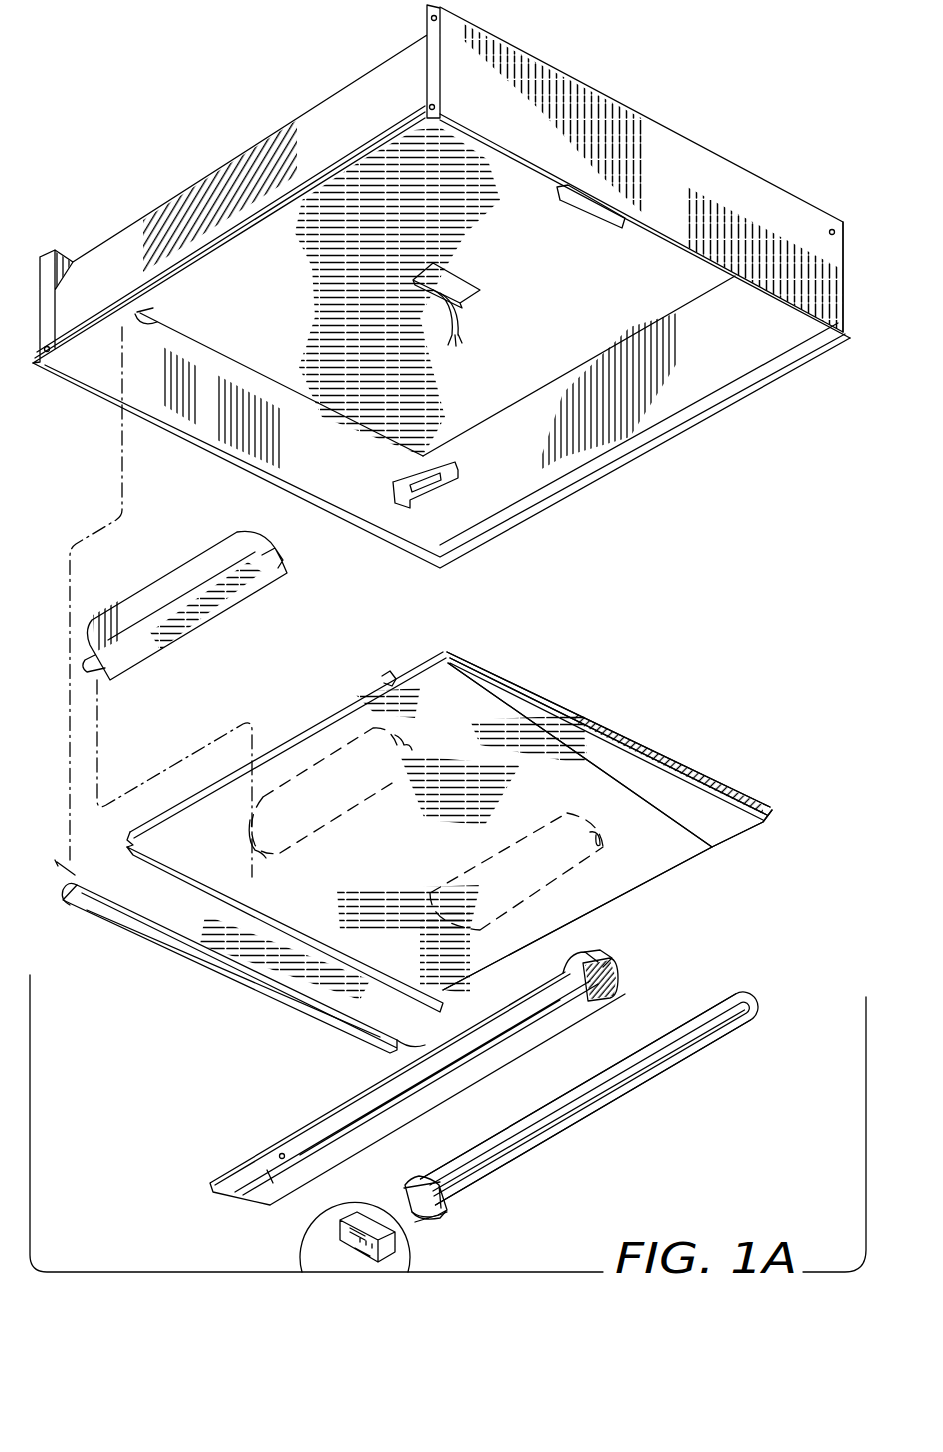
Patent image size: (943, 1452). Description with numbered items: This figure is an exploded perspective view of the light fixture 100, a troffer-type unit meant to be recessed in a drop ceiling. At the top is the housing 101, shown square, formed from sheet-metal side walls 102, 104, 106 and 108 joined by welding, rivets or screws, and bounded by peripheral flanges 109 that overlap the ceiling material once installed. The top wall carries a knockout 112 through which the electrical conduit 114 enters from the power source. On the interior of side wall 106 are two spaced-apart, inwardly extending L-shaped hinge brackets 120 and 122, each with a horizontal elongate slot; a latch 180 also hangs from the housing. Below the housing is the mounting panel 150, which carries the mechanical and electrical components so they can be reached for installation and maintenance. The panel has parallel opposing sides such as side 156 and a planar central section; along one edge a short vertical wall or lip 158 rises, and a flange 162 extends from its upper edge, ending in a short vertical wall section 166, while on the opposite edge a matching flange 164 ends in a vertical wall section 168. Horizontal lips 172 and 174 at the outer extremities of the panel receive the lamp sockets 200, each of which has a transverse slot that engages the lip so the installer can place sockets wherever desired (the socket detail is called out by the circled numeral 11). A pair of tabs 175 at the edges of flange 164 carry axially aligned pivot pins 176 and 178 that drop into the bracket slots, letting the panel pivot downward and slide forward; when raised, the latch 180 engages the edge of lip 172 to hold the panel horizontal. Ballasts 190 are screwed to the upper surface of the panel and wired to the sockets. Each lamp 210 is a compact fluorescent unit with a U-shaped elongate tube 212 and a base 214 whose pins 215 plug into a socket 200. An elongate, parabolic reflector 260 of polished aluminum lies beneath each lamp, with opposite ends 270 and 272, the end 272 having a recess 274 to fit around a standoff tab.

The light fixture 100 is at (686, 97).
The housing 101 is at (772, 213).
The side wall 102 is at (124, 256).
The side wall 104 is at (526, 455).
The side wall 106 is at (321, 466).
The side wall 108 is at (683, 160).
The peripheral flanges 109 is at (630, 455).
The knockout 112 is at (455, 282).
The electrical conduit 114 is at (458, 318).
The hinge bracket 120 is at (455, 470).
The hinge bracket 122 is at (145, 323).
The latch 180 is at (588, 214).
The ballast 190 is at (168, 572).
The mounting panel 150 is at (645, 848).
The side of panel 156 is at (640, 884).
The vertical wall or lip 158 is at (392, 673).
The flange 162 is at (460, 693).
The flange 164 is at (230, 950).
The vertical wall section 166 is at (462, 658).
The vertical wall section 168 is at (80, 870).
The lip 172 is at (548, 707).
The lip 174 is at (280, 1000).
The tab 175 is at (130, 852).
The pivot pin 176 is at (57, 862).
The pivot pin 178 is at (407, 1053).
The lamp socket 200 is at (365, 1213).
The lamp 210 is at (728, 992).
The elongate tube 212 is at (632, 1083).
The base 214 is at (412, 1183).
The pins 215 is at (413, 1220).
The reflector 260 is at (618, 972).
The reflector end 270 is at (263, 1190).
The reflector end 272 is at (603, 965).
The recess 274 is at (598, 958).
The detail circle 11 is at (302, 1262).